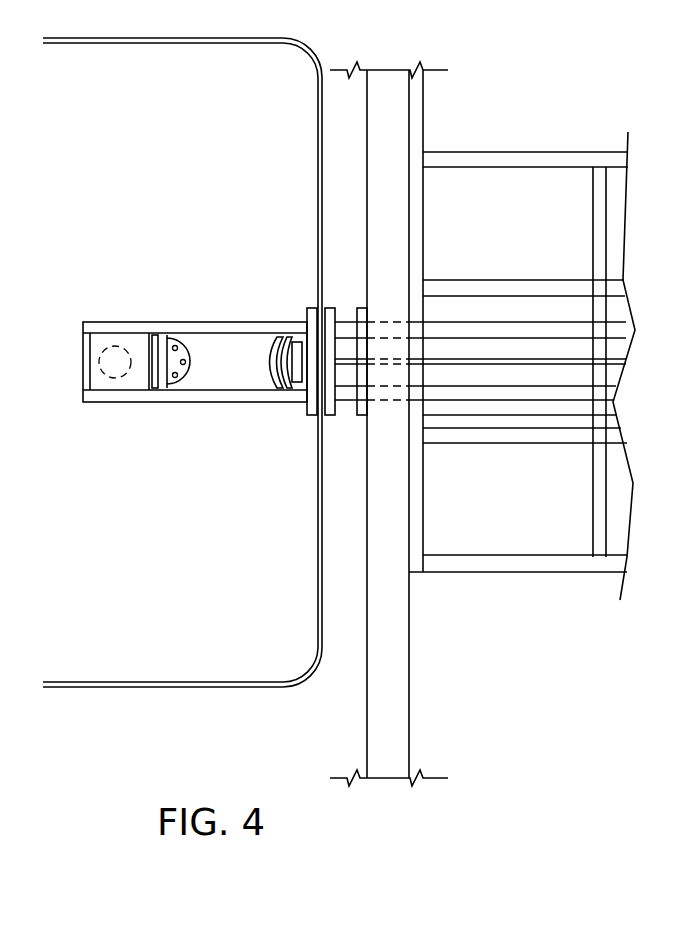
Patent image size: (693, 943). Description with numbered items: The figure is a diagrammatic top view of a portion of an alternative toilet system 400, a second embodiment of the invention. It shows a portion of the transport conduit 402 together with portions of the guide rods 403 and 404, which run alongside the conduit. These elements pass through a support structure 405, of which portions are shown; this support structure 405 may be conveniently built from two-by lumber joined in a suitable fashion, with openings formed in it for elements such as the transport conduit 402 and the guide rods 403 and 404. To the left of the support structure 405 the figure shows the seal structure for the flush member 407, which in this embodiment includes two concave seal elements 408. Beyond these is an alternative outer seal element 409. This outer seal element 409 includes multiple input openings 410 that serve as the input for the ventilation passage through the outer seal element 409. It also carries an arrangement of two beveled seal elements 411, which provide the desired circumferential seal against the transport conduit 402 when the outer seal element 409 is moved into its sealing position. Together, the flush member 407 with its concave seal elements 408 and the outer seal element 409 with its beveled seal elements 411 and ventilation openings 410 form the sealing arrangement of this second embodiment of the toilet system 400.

The alternative toilet system 400 is at (494, 588).
The transport conduit 402 is at (487, 339).
The guide rod 403 is at (533, 322).
The guide rod 404 is at (540, 402).
The support structure 405 is at (470, 153).
The flush member 407 is at (299, 380).
The concave seal elements 408 is at (285, 345).
The outer seal element 409 is at (123, 403).
The input openings 410 is at (182, 345).
The beveled seal elements 411 is at (155, 388).